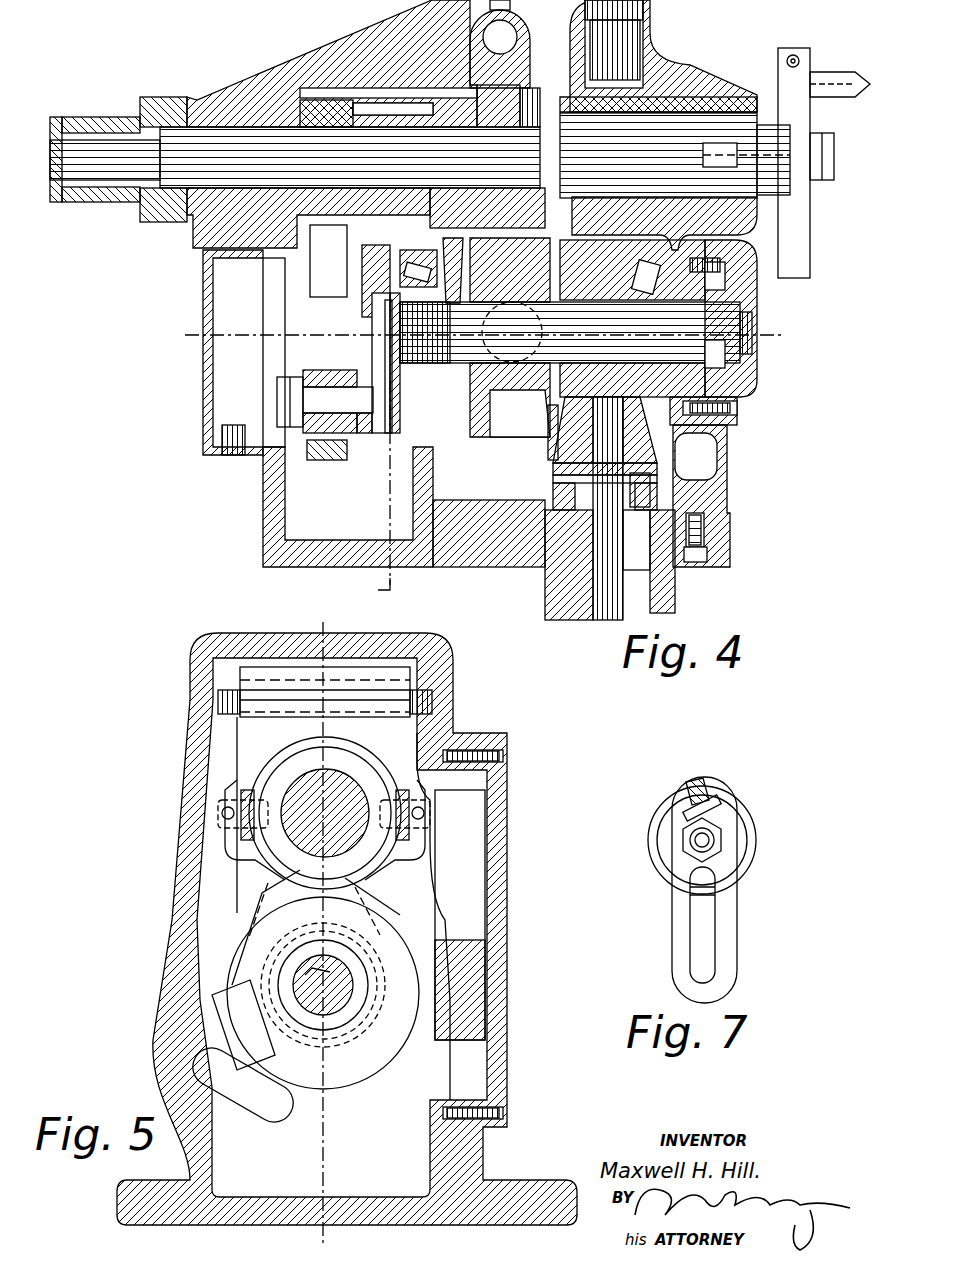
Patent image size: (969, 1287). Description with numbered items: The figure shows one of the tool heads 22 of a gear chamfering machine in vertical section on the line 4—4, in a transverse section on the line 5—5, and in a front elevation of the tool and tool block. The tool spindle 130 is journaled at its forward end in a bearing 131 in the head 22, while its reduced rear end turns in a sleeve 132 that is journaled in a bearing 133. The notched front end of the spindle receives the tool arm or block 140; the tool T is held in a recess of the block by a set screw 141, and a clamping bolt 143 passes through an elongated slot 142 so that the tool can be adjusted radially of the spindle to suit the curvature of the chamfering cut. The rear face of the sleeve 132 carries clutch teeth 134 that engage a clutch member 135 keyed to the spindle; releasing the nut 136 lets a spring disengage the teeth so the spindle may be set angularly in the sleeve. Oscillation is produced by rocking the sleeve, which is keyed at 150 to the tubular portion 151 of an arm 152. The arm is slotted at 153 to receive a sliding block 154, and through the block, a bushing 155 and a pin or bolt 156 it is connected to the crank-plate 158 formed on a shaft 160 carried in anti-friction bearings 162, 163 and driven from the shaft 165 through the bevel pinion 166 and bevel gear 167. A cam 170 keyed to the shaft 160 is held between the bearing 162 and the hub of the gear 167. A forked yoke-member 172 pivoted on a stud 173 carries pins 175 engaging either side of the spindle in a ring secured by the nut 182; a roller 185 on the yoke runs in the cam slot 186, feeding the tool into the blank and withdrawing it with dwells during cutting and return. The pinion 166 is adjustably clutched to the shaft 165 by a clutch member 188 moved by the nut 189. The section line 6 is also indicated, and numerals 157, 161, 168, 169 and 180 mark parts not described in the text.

In FIG. 4, the tool head 22 is at (265, 510).
In FIG. 5, the tool head 22 is at (172, 950).
In FIG. 4, the tool spindle 130 is at (560, 200).
In FIG. 5, the tool spindle 130 is at (308, 846).
In FIG. 7, the tool spindle 130 is at (752, 830).
In FIG. 4, the bearing 131 is at (728, 97).
In FIG. 4, the sleeve 132 is at (303, 108).
In FIG. 4, the bearing 133 is at (220, 98).
In FIG. 4, the clutch teeth 134 is at (165, 99).
In FIG. 4, the clutch member 135 is at (110, 117).
In FIG. 4, the nut 136 is at (58, 118).
In FIG. 4, the tool arm or block 140 is at (806, 232).
In FIG. 7, the tool arm or block 140 is at (728, 910).
In FIG. 7, the set screw 141 is at (700, 782).
In FIG. 7, the elongated slot 142 is at (700, 938).
In FIG. 4, the clamping bolt 143 is at (832, 158).
In FIG. 7, the clamping bolt 143 is at (688, 850).
In FIG. 4, the key 150 is at (393, 110).
In FIG. 4, the tubular portion 151 is at (350, 100).
In FIG. 5, the tubular portion 151 is at (278, 870).
In FIG. 4, the arm 152 is at (330, 461).
In FIG. 5, the arm 152 is at (360, 880).
In FIG. 5, the slot 153 is at (256, 1102).
In FIG. 4, the sliding block 154 is at (330, 372).
In FIG. 5, the sliding block 154 is at (240, 1010).
In FIG. 4, the bushing 155 is at (362, 435).
In FIG. 4, the pin or bolt 156 is at (285, 406).
In FIG. 4, the flange 157 is at (160, 210).
In FIG. 4, the crank-plate 158 is at (392, 428).
In FIG. 4, the shaft 160 is at (585, 303).
In FIG. 4, the bushing 161 is at (700, 485).
In FIG. 4, the anti-friction bearing 162 is at (395, 262).
In FIG. 4, the anti-friction bearing 163 is at (735, 288).
In FIG. 4, the shaft 165 is at (600, 612).
In FIG. 4, the bevel pinion 166 is at (595, 406).
In FIG. 4, the bevel gear 167 is at (642, 270).
In FIG. 4, the spacer 168 is at (388, 436).
In FIG. 4, the bearing 169 is at (645, 473).
In FIG. 4, the cam 170 is at (510, 420).
In FIG. 5, the cam 170 is at (350, 1090).
In FIG. 4, the yoke-member 172 is at (472, 56).
In FIG. 5, the yoke-member 172 is at (430, 876).
In FIG. 5, the stud 173 is at (245, 690).
In FIG. 5, the pins 175 is at (222, 813).
In FIG. 4, the bearing 180 is at (500, 228).
In FIG. 4, the nut 182 is at (540, 100).
In FIG. 4, the roller 185 is at (525, 100).
In FIG. 5, the roller 185 is at (420, 1060).
In FIG. 4, the cam slot 186 is at (532, 440).
In FIG. 4, the clutch member 188 is at (556, 470).
In FIG. 4, the nut 189 is at (553, 500).
In FIG. 5, the section line 4— 4 is at (320, 929).
In FIG. 4, the section line 5— 5 is at (376, 491).
In FIG. 4, the section line 6 is at (484, 335).
In FIG. 4, the tool T is at (833, 73).
In FIG. 7, the tool T is at (715, 800).